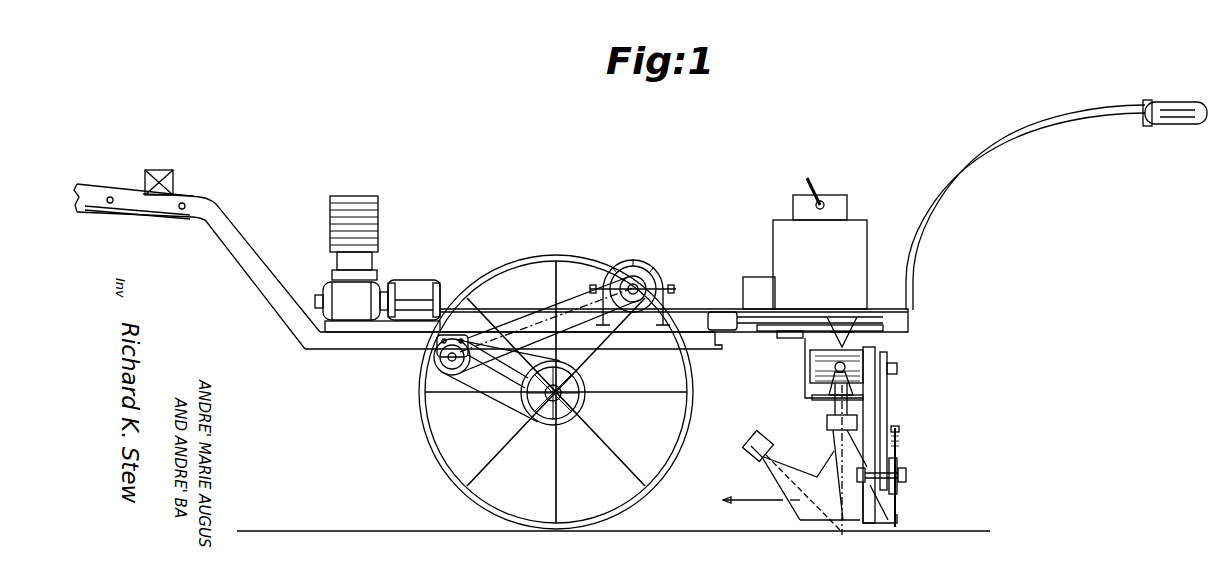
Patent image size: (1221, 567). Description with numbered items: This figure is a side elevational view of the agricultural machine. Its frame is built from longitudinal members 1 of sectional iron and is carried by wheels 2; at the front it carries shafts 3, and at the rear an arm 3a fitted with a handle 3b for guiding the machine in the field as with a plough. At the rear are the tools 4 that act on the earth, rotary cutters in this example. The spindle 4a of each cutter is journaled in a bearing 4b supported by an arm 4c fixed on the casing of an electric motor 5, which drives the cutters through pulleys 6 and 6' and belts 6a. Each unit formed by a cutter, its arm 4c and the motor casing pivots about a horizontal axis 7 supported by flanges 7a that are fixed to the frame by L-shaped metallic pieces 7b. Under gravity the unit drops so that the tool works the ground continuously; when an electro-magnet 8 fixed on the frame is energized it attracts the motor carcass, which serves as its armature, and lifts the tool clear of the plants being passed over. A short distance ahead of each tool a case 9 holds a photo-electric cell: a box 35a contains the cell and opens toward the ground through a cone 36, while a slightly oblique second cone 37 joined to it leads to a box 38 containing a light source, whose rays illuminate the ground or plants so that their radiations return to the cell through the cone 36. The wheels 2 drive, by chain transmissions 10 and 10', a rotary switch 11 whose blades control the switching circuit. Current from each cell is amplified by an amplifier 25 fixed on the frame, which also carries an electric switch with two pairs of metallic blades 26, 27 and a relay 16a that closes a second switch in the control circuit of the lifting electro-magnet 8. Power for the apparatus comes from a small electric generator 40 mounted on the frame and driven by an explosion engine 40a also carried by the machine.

The longitudinal member 1 is at (375, 343).
The wheel 2 is at (690, 397).
The shaft 3 is at (150, 213).
The arm 3a is at (994, 152).
The handle 3b is at (1168, 103).
The tool 4 is at (898, 446).
The spindle 4a is at (908, 476).
The bearing 4b is at (880, 522).
The arm 4c is at (876, 401).
The electric motor 5 is at (816, 361).
The pulley 6 is at (897, 414).
The belt 6a is at (898, 372).
The pulley 6' is at (905, 480).
The horizontal axis 7 is at (814, 373).
The flange 7a is at (835, 386).
The L-shaped metallic piece 7b is at (803, 341).
The electro-magnet 8 is at (866, 345).
The case 9 is at (827, 453).
The chain transmission 10 is at (497, 385).
The chain transmission 10' is at (549, 305).
The relay 16a is at (762, 275).
The rotary switch 11 is at (640, 271).
The amplifier 25 is at (852, 231).
The metallic blade 26 is at (840, 194).
The metallic blade 27 is at (850, 195).
The box 35a is at (858, 422).
The cone 36 is at (850, 446).
The cone 37 is at (770, 473).
The box 38 is at (748, 451).
The electric generator 40 is at (410, 287).
The explosion engine 40a is at (345, 247).